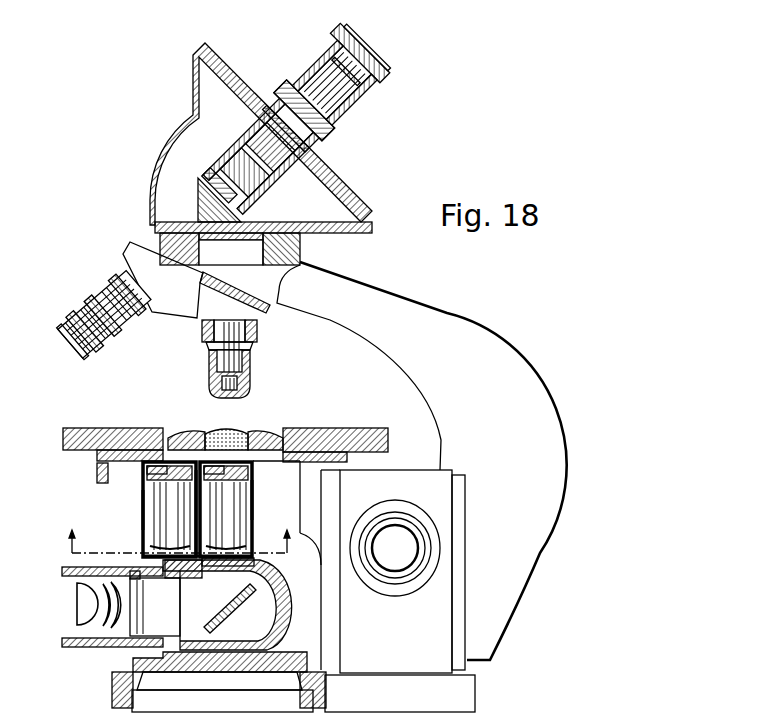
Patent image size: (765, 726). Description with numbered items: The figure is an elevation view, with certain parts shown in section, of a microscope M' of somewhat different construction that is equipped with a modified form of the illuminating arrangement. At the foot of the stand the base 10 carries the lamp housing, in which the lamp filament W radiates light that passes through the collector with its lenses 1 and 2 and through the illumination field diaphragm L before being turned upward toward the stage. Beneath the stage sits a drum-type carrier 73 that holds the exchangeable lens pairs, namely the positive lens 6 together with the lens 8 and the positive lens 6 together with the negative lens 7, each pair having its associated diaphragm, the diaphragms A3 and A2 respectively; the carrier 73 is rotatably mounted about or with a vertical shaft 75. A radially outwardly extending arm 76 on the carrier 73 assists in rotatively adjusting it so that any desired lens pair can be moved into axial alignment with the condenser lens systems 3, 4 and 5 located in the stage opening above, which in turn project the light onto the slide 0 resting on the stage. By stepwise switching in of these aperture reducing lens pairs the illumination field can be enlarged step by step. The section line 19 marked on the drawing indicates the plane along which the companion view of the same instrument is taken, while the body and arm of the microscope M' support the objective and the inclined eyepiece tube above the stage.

The slide 0 is at (222, 426).
The collector lens 1 is at (100, 617).
The collector lens 2 is at (109, 627).
The condenser lens 3 is at (254, 466).
The condenser lens 4 is at (251, 433).
The condenser lens 5 is at (237, 424).
The positive lens 6 is at (158, 545).
The negative lens 7 is at (254, 483).
The lens 8 is at (145, 473).
The base 10 is at (293, 689).
The section line 19 is at (179, 530).
The drum-type carrier 73 is at (143, 503).
The vertical shaft 75 is at (197, 535).
The arm 76 is at (102, 464).
The lamp filament W is at (83, 607).
The illumination field diaphragm L is at (147, 601).
The microscope M' is at (422, 461).
The aperture diaphragm A2 is at (226, 509).
The aperture diaphragm A3 is at (169, 509).